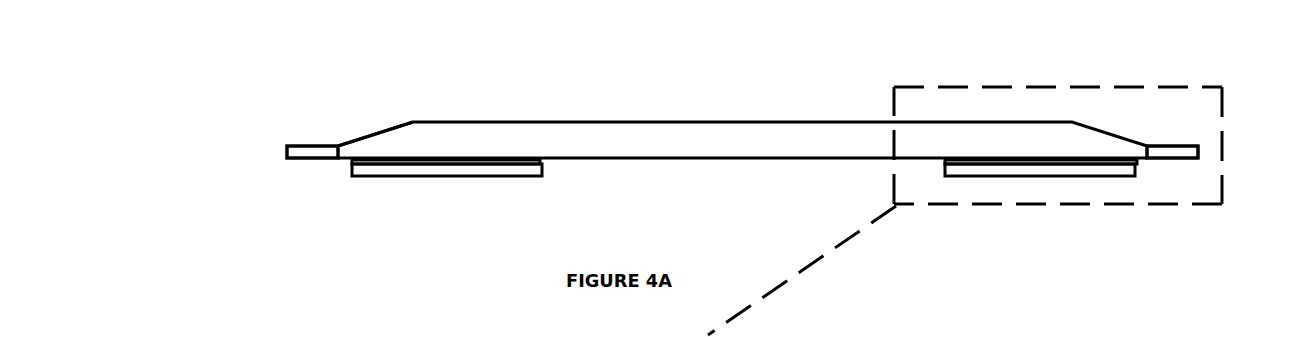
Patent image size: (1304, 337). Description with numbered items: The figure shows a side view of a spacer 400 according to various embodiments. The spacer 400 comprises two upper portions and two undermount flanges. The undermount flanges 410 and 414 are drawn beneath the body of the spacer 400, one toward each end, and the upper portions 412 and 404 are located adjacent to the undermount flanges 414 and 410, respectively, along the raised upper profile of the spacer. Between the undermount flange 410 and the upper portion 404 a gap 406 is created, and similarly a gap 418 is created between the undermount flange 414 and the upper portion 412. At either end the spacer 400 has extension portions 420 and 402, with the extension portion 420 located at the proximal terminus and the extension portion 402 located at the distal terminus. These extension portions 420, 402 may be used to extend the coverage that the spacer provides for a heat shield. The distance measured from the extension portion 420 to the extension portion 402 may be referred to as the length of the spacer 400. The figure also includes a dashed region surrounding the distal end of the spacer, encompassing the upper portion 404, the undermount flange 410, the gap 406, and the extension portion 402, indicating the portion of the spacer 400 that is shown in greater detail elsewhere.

The spacer 400 is at (216, 99).
The extension portion 402 is at (1215, 156).
The upper portion 404 is at (1138, 116).
The gap 406 is at (1145, 176).
The undermount flange 410 is at (1051, 194).
The upper portion 412 is at (357, 120).
The undermount flange 414 is at (437, 193).
The gap 418 is at (343, 178).
The extension portion 420 is at (279, 173).